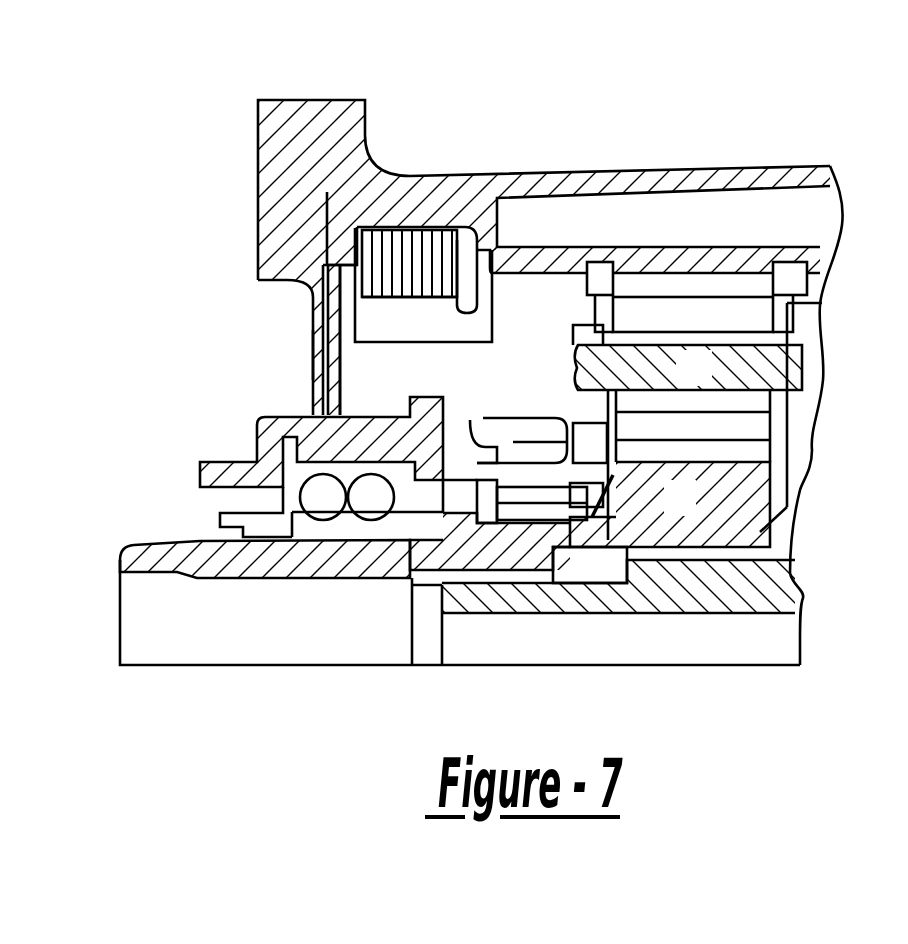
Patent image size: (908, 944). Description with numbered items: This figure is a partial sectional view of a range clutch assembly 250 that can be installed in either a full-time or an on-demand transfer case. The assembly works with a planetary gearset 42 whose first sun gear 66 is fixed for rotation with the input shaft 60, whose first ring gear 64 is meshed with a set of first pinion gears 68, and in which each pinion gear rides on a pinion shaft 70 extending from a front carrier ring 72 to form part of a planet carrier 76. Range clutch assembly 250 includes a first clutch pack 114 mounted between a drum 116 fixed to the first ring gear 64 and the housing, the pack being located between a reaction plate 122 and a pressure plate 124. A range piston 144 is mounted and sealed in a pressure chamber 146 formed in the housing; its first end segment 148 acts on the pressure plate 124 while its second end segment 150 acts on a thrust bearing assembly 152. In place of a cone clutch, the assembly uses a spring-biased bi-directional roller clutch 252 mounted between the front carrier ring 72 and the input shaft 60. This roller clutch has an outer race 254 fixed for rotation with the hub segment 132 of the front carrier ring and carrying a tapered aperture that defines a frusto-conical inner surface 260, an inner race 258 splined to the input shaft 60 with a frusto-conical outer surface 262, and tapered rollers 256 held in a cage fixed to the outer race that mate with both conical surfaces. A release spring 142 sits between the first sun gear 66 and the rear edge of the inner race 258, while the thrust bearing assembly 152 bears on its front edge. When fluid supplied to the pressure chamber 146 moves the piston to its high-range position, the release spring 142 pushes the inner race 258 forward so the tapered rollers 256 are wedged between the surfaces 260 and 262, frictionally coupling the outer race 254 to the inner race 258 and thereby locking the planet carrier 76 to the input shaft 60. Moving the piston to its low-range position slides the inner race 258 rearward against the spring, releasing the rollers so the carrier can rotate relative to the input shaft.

The planetary gearset 42 is at (681, 207).
The input shaft 60 is at (163, 548).
The first ring gear 64 is at (687, 262).
The first sun gear 66 is at (693, 514).
The first pinion gears 68 is at (657, 310).
The pinion shaft 70 is at (706, 384).
The front carrier ring 72 is at (585, 325).
The planet carrier 76 is at (785, 523).
The first clutch pack 114 is at (386, 218).
The drum 116 is at (440, 339).
The reaction plate 122 is at (481, 229).
The pressure plate 124 is at (382, 222).
The hub segment 132 is at (514, 437).
The release spring 142 is at (590, 512).
The range piston 144 is at (333, 320).
The pressure chamber 146 is at (300, 263).
The first end segment 148 is at (325, 192).
The second end segment 150 is at (410, 507).
The thrust bearing assembly 152 is at (425, 576).
The range clutch assembly 250 is at (348, 376).
The bi-directional roller clutch 252 is at (412, 373).
The outer race 254 is at (540, 457).
The tapered rollers 256 is at (498, 440).
The inner race 258 is at (515, 575).
The frusto-conical inner surface 260 is at (518, 498).
The frusto-conical outer surface 262 is at (545, 415).